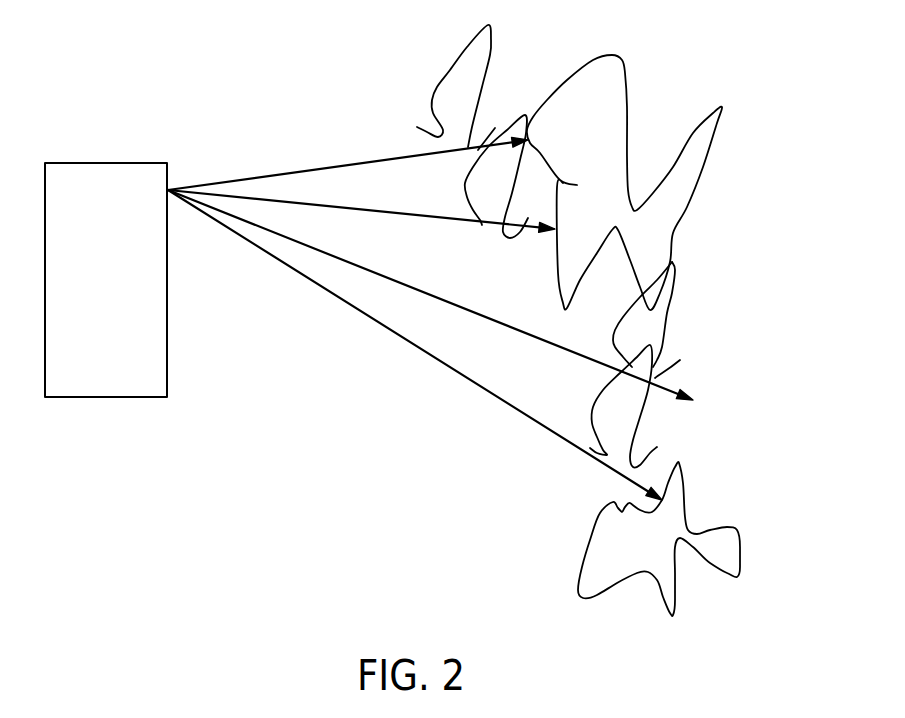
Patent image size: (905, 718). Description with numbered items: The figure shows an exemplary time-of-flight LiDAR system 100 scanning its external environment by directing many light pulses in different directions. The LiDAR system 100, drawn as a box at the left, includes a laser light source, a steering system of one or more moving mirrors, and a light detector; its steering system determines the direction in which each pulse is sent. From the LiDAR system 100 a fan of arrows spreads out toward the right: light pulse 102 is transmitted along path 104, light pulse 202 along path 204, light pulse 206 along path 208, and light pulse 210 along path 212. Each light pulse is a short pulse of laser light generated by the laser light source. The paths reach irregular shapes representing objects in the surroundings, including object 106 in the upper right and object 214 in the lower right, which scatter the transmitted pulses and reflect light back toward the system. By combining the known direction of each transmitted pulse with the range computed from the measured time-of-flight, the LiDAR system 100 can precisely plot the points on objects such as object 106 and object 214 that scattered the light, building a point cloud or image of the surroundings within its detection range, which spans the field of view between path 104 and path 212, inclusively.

The LiDAR system 100 is at (127, 294).
The light pulse 102 is at (455, 53).
The path 104 is at (317, 166).
The object 106 is at (700, 180).
The light pulse 202 is at (472, 168).
The path 204 is at (413, 217).
The light pulse 206 is at (673, 312).
The path 208 is at (473, 313).
The light pulse 210 is at (637, 433).
The path 212 is at (512, 410).
The object 214 is at (745, 550).